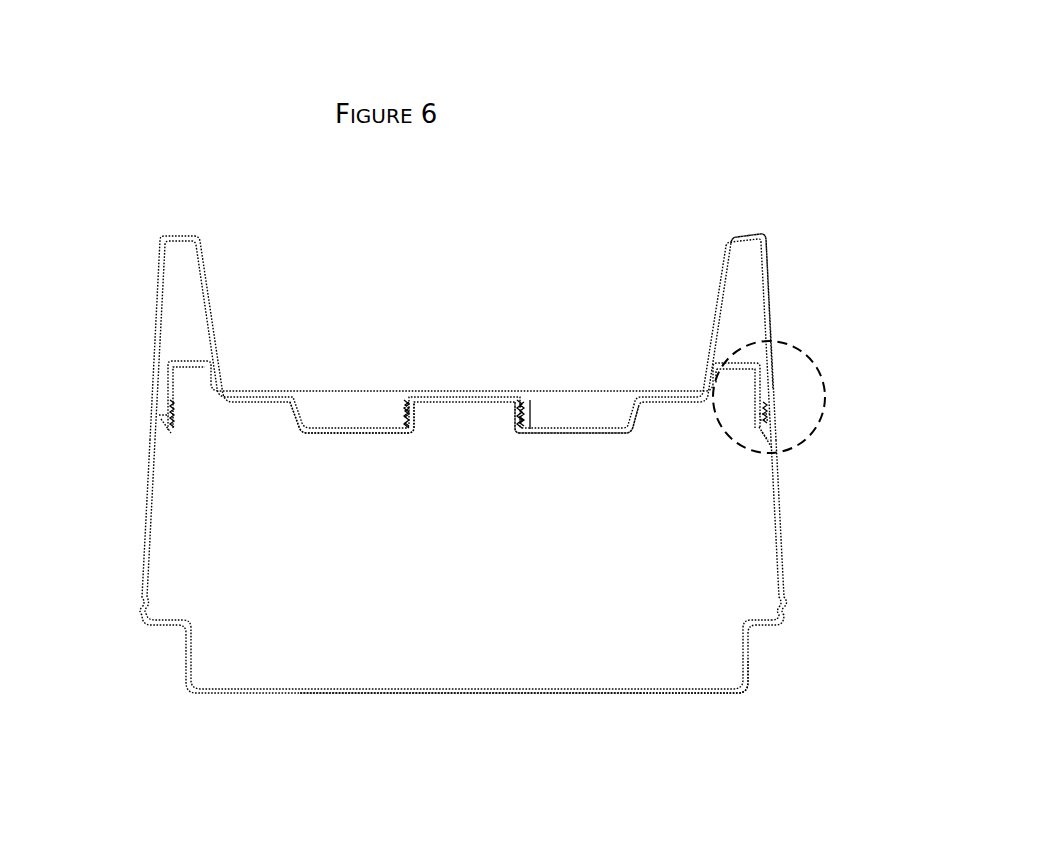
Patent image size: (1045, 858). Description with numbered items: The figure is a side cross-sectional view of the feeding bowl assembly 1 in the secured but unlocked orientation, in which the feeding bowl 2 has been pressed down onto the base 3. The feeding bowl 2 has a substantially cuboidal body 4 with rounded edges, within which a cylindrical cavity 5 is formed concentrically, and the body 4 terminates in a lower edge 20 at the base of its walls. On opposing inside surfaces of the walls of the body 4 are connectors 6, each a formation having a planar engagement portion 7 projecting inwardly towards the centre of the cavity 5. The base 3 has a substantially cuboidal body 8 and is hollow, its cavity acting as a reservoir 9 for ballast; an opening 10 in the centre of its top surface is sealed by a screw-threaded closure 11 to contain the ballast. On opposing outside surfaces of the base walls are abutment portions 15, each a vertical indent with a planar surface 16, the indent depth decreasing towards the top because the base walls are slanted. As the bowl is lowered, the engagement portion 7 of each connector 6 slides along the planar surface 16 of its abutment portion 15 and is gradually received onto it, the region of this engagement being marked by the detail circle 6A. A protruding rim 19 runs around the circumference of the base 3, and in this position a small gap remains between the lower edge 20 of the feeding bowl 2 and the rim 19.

The feeding bowl assembly 1 is at (143, 100).
The feeding bowl 2 is at (781, 216).
The base 3 is at (416, 705).
The body 4 is at (742, 241).
The cylindrical cavity 5 is at (573, 318).
The connector 6 is at (140, 421).
The detail region 6A is at (780, 344).
The planar engagement portion 7 is at (158, 418).
The body 8 is at (645, 692).
The reservoir 9 is at (492, 664).
The opening 10 is at (412, 412).
The closure 11 is at (508, 404).
The abutment portion 15 is at (162, 389).
The planar surface 16 is at (158, 438).
The rim 19 is at (772, 428).
The lower edge 20 is at (772, 428).